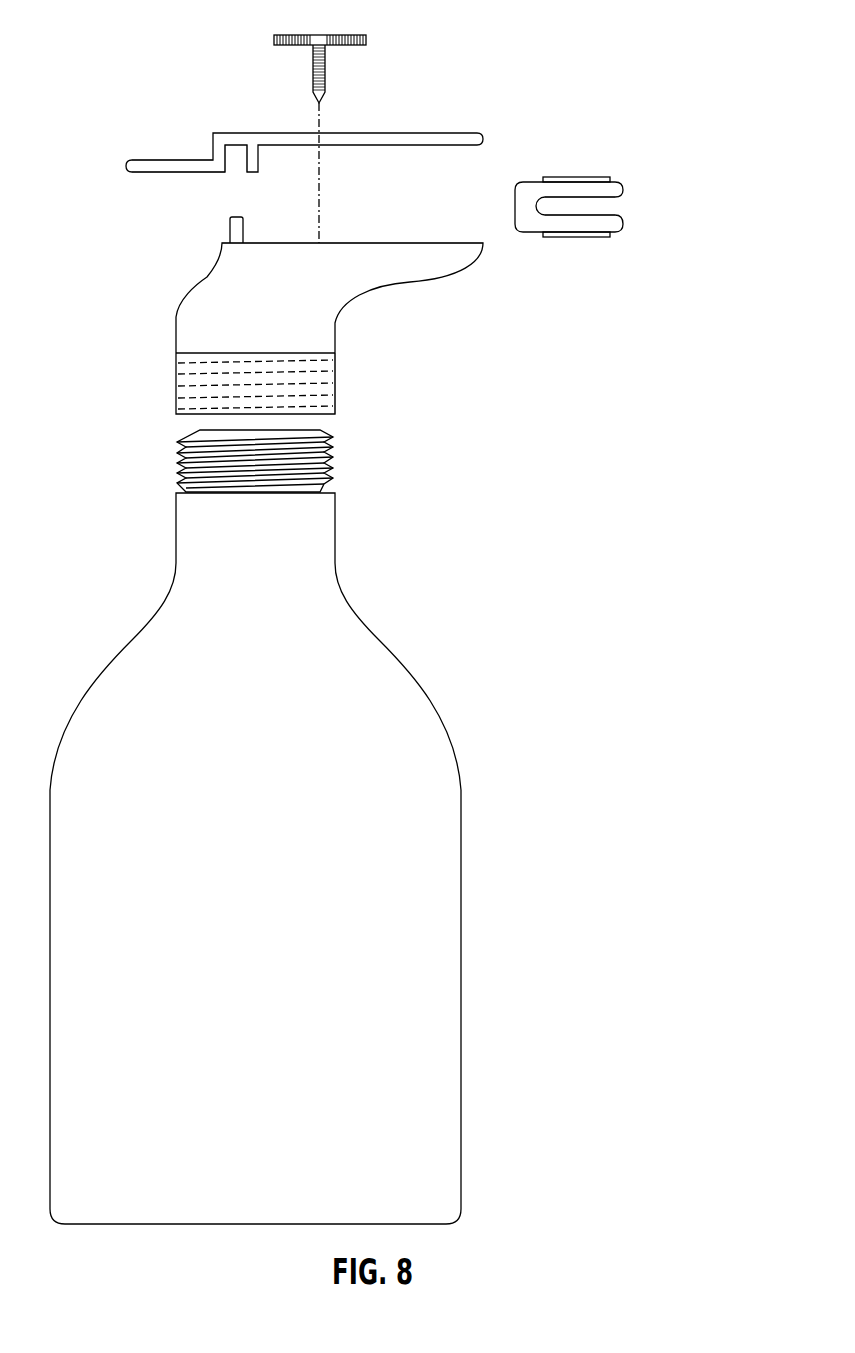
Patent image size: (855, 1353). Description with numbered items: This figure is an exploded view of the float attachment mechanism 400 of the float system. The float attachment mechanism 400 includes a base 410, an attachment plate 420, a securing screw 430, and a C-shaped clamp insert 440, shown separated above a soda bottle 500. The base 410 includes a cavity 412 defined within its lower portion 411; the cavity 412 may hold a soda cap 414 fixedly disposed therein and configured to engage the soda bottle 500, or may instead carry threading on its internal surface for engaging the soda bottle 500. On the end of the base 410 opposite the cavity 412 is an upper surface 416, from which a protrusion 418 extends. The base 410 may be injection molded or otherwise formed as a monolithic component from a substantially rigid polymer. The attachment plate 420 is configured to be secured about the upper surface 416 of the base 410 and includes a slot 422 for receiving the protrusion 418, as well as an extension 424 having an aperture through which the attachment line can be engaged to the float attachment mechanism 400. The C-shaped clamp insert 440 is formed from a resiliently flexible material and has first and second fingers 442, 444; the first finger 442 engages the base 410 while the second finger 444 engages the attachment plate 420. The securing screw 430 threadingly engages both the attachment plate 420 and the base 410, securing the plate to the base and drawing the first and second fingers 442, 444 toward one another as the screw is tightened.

The float attachment mechanism 400 is at (600, 78).
The base 410 is at (336, 318).
The lower portion 411 is at (182, 370).
The cavity 412 is at (198, 402).
The soda cap 414 is at (330, 386).
The upper surface 416 is at (353, 243).
The protrusion 418 is at (229, 229).
The attachment plate 420 is at (247, 132).
The slot 422 is at (237, 172).
The extension 424 is at (162, 158).
The securing screw 430 is at (293, 35).
The C-shaped clamp insert 440 is at (617, 262).
The first finger 442 is at (623, 192).
The second finger 444 is at (622, 220).
The soda bottle 500 is at (460, 876).